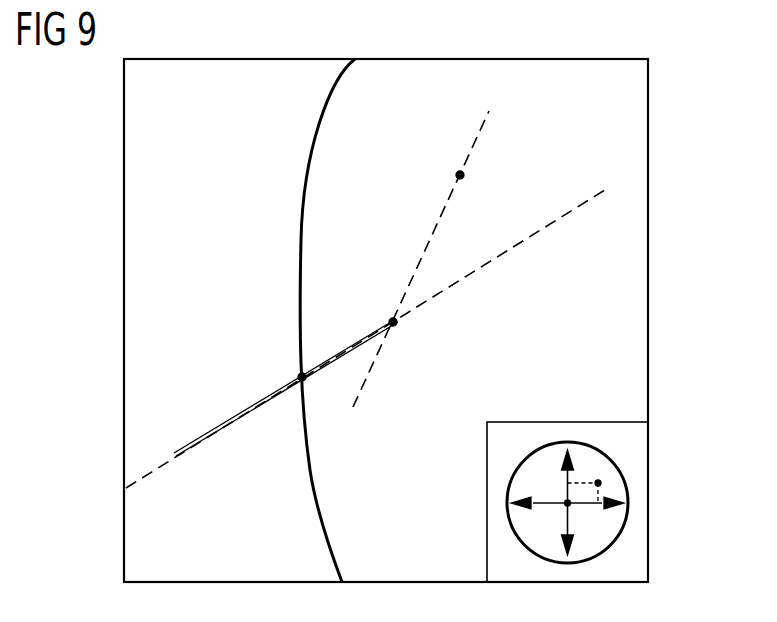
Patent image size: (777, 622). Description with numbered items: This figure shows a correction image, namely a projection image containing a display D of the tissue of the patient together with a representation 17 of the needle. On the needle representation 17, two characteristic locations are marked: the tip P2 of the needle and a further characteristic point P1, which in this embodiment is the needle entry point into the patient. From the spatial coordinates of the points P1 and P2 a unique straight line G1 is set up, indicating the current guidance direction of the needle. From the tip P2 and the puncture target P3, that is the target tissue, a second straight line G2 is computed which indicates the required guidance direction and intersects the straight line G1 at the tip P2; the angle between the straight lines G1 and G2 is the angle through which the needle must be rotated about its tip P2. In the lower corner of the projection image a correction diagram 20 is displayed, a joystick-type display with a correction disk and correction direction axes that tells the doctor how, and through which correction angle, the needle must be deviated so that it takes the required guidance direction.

The display of the tissue D is at (622, 126).
The representation of the needle 17 is at (228, 417).
The correction diagram 20 is at (622, 447).
The characteristic point on the needle P1 is at (300, 374).
The tip of the needle P2 is at (391, 318).
The puncture target P3 is at (457, 172).
The straight line indicating the current guidance direction G1 is at (562, 222).
The straight line indicating the required guidance direction G2 is at (487, 121).